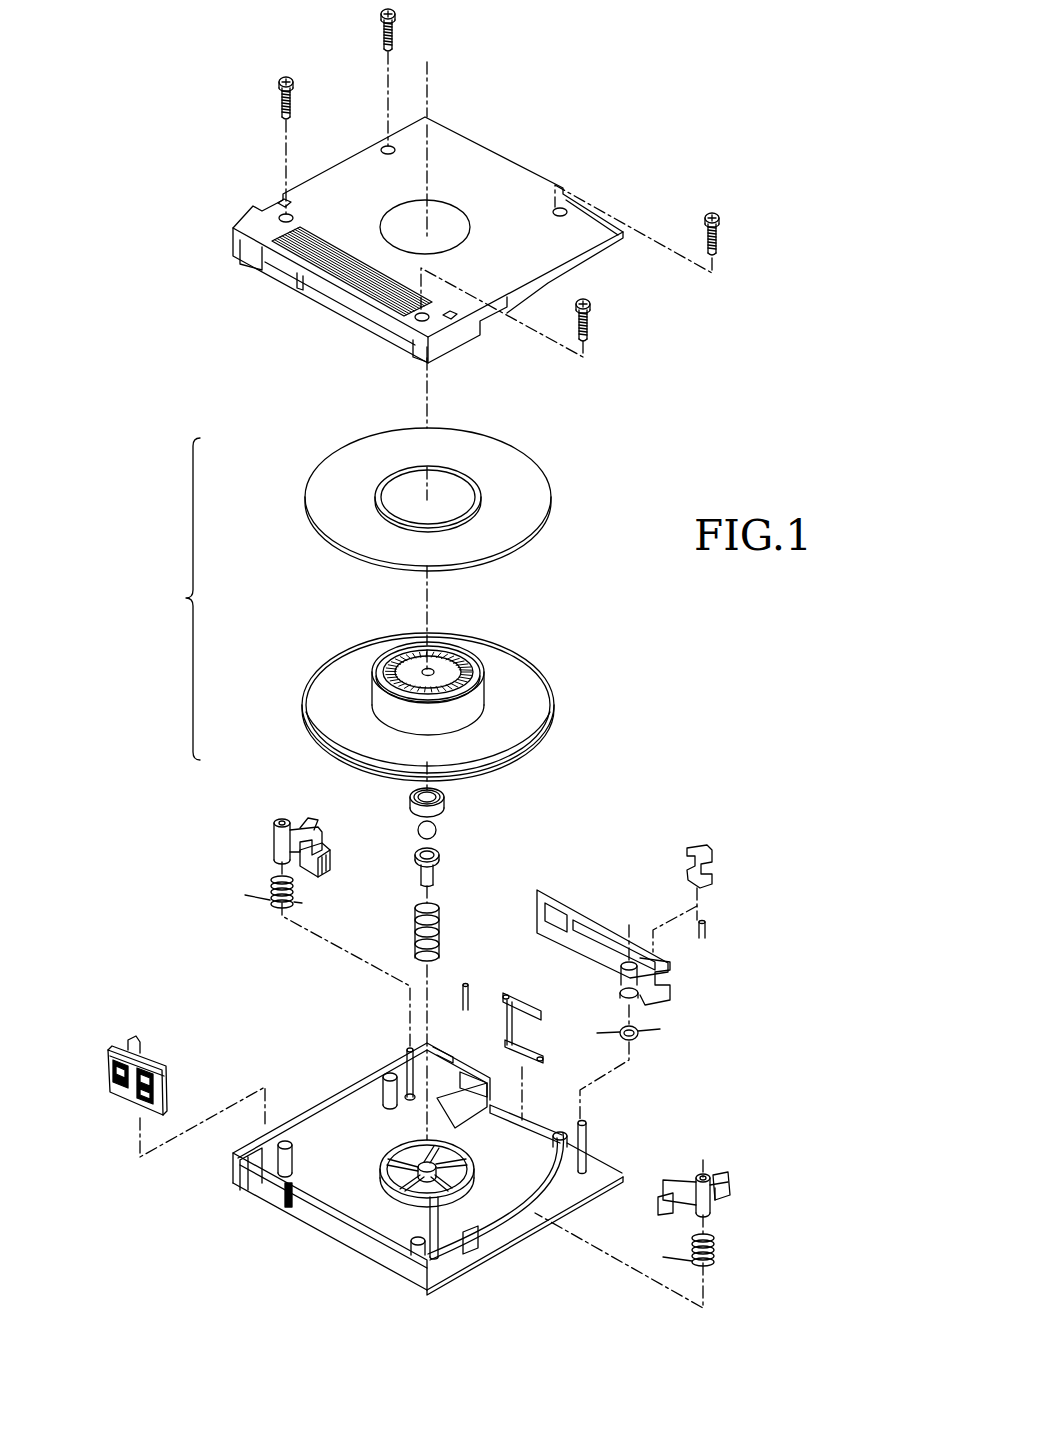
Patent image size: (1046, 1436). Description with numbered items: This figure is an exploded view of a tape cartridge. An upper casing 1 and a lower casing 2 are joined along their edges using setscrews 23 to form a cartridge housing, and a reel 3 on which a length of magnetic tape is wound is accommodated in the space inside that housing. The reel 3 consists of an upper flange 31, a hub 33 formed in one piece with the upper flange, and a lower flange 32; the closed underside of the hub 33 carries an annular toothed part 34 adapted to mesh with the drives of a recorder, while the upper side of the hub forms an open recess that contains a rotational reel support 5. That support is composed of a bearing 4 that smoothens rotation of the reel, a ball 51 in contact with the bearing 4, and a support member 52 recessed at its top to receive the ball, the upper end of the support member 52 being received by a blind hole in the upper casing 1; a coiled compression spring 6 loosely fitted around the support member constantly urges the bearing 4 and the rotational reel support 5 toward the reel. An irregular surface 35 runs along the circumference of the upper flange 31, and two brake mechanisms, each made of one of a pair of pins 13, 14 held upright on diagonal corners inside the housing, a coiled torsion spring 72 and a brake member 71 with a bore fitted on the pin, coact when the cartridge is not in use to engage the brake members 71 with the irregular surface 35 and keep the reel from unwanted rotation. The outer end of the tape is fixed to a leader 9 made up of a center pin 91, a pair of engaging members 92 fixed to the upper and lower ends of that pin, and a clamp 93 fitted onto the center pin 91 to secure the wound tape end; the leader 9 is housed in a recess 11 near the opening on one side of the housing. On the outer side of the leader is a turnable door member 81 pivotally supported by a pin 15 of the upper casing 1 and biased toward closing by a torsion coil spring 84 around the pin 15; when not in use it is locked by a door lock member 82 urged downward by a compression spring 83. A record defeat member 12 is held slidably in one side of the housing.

The upper casing 1 is at (439, 1160).
The lower casing 2 is at (248, 224).
The reel 3 is at (183, 599).
The bearing 4 is at (412, 800).
The rotational reel support 5 is at (422, 847).
The coiled compression spring 6 is at (415, 918).
The leader 9 is at (514, 1029).
The recess 11 is at (510, 1125).
The record defeat member 12 is at (115, 1045).
The pin 13 is at (407, 1055).
The pin 14 is at (445, 1215).
The pin 15 is at (590, 1132).
The setscrews 23 is at (396, 27).
The upper flange 31 is at (419, 689).
The lower flange 32 is at (345, 497).
The hub 33 is at (475, 695).
The annular toothed part 34 is at (455, 660).
The irregular surface 35 is at (553, 720).
The ball 51 is at (416, 832).
The support member 52 is at (418, 872).
The brake member 71 is at (274, 828).
The coiled torsion spring 72 is at (272, 890).
The door member 81 is at (596, 915).
The door lock member 82 is at (697, 846).
The compression spring 83 is at (706, 932).
The torsion coil spring 84 is at (638, 1035).
The center pin 91 is at (512, 1030).
The engaging members 92 is at (541, 1013).
The clamp 93 is at (462, 996).